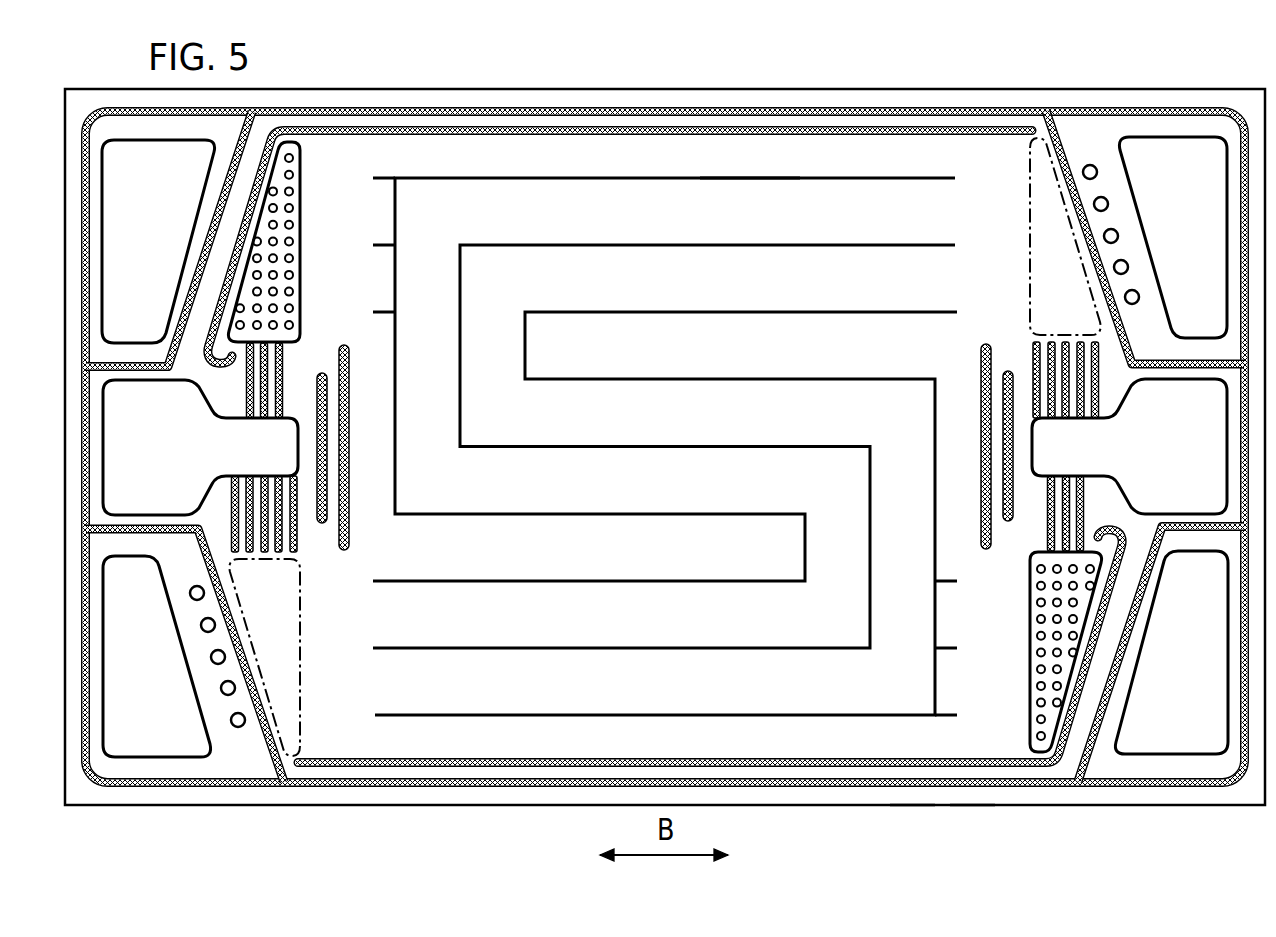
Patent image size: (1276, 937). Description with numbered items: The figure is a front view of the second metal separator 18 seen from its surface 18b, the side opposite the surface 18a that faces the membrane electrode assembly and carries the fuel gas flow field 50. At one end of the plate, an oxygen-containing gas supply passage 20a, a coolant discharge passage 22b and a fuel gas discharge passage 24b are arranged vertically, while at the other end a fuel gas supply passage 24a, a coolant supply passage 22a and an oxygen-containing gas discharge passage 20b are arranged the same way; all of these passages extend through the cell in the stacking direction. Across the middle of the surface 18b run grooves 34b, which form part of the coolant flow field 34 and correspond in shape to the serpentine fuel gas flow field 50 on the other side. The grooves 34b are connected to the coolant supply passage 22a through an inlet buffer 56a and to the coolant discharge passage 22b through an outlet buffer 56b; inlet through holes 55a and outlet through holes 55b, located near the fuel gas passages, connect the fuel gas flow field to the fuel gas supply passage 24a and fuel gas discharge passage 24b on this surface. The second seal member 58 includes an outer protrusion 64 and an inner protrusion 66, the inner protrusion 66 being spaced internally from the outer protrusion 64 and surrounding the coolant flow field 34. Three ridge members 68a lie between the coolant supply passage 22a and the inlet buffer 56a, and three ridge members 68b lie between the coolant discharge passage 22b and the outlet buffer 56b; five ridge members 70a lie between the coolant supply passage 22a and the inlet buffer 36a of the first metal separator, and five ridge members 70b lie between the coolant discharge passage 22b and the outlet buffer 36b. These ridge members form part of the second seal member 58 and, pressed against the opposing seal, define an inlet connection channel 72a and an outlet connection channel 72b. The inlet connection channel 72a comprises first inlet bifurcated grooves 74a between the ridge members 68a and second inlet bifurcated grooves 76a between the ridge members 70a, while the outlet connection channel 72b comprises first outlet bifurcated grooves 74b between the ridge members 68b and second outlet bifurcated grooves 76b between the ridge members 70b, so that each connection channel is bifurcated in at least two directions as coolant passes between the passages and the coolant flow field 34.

The second metal separator 18 is at (1019, 59).
The surface 18a is at (970, 793).
The surface 18b is at (913, 793).
The oxygen-containing gas supply passage 20a is at (158, 241).
The oxygen-containing gas discharge passage 20b is at (1171, 652).
The coolant supply passage 22a is at (1129, 446).
The coolant discharge passage 22b is at (200, 447).
The fuel gas supply passage 24a is at (1173, 237).
The fuel gas discharge passage 24b is at (157, 656).
The coolant flow field 34 is at (812, 174).
The grooves 34b is at (743, 177).
The inlet buffer 36a is at (1065, 236).
The outlet buffer 36b is at (264, 657).
The fuel gas flow field 50 is at (473, 175).
The inlet through holes 55a is at (1111, 236).
The outlet through holes 55b is at (238, 720).
The inlet buffer 56a is at (1073, 633).
The outlet buffer 56b is at (238, 312).
The second seal member 58 is at (902, 104).
The outer protrusion 64 is at (593, 106).
The inner protrusion 66 is at (660, 127).
The ridge members 68a is at (1048, 492).
The ridge members 68b is at (291, 403).
The ridge members 70a is at (1102, 383).
The ridge members 70b is at (233, 510).
The inlet connection channel 72a is at (1030, 477).
The outlet connection channel 72b is at (300, 413).
The first inlet bifurcated grooves 74a is at (1075, 498).
The first outlet bifurcated grooves 74b is at (253, 393).
The second inlet bifurcated grooves 76a is at (1058, 410).
The second outlet bifurcated grooves 76b is at (255, 487).